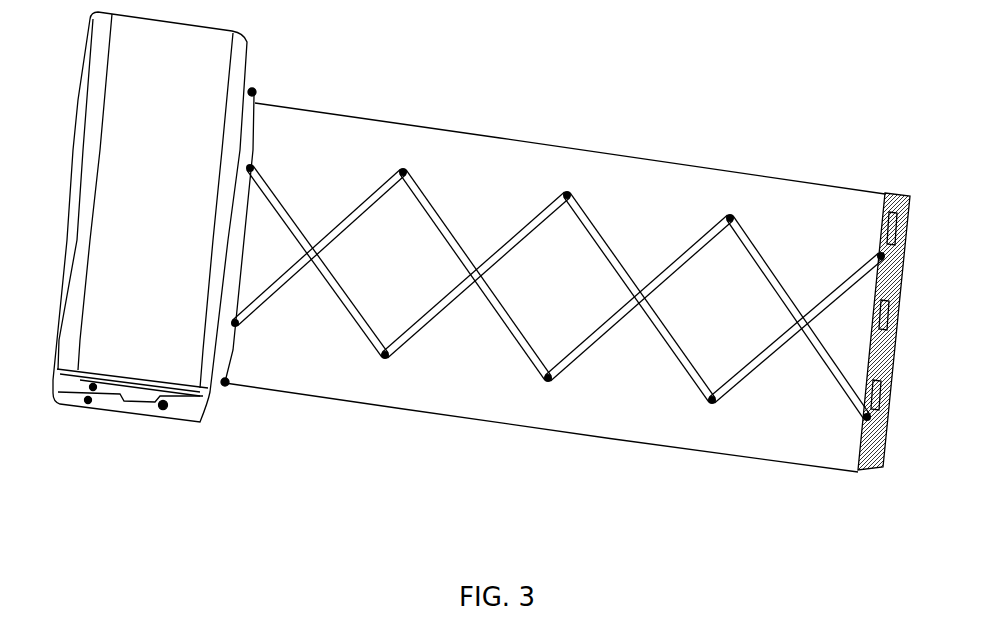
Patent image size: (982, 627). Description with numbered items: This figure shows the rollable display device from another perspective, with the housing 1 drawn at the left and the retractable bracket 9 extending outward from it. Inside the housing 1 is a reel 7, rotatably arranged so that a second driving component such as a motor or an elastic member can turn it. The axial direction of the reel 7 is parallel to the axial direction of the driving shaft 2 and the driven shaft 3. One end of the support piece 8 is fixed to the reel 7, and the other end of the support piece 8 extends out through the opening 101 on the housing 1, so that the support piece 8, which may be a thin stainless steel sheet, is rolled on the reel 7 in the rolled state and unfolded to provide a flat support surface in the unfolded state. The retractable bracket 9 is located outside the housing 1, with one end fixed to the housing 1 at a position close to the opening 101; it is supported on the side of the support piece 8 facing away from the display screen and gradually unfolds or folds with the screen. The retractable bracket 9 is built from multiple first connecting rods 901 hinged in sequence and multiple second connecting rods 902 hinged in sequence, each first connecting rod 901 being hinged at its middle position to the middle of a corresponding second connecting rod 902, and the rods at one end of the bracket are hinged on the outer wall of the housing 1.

The housing 1 is at (208, 390).
The driving shaft 2 is at (90, 402).
The driven shaft 3 is at (115, 408).
The reel 7 is at (178, 355).
The opening 101 is at (223, 353).
The support piece 8 is at (335, 388).
The retractable bracket 9 is at (558, 353).
The first connecting rod 901 is at (420, 333).
The second connecting rod 902 is at (515, 327).